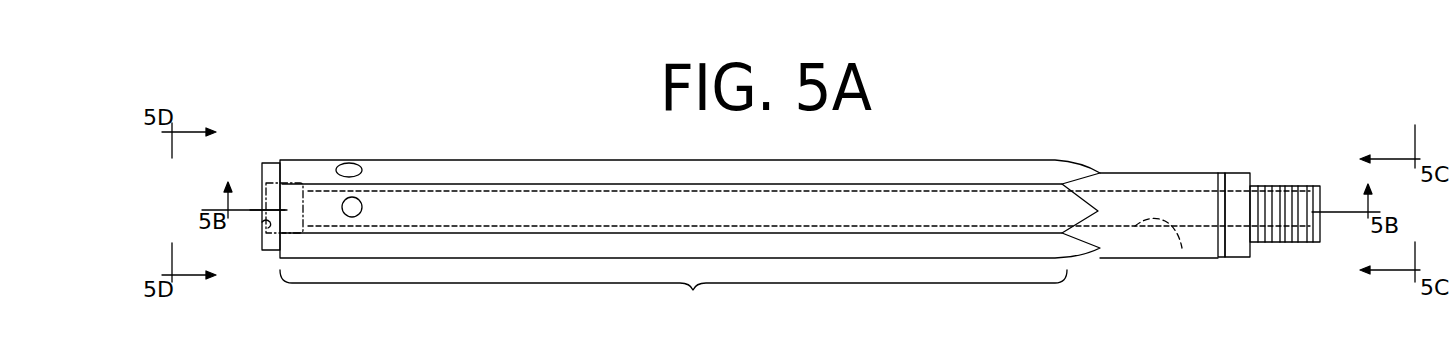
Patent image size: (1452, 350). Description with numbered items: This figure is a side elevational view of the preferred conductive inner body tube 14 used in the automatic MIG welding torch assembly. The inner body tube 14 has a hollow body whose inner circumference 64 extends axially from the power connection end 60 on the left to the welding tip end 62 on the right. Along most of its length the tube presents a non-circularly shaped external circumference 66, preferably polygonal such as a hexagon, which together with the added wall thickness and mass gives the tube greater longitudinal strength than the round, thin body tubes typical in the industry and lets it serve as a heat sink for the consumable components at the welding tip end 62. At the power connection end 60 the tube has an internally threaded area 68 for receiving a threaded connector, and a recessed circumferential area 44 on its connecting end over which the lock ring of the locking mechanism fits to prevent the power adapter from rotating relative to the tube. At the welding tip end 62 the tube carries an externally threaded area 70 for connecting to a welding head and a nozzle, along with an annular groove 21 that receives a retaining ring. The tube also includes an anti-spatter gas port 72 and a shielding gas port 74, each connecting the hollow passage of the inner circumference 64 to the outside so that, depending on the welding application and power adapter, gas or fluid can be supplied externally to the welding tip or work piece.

The inner body tube 14 is at (578, 152).
The annular groove 21 is at (1222, 173).
The recessed circumferential area 44 is at (274, 167).
The power connection end 60 is at (252, 164).
The welding tip end 62 is at (1335, 180).
The inner circumference 64 is at (1180, 258).
The external circumference 66 is at (673, 296).
The internally threaded area 68 is at (264, 224).
The externally threaded area 70 is at (1290, 243).
The anti-spatter gas port 72 is at (349, 170).
The shielding gas port 74 is at (352, 207).